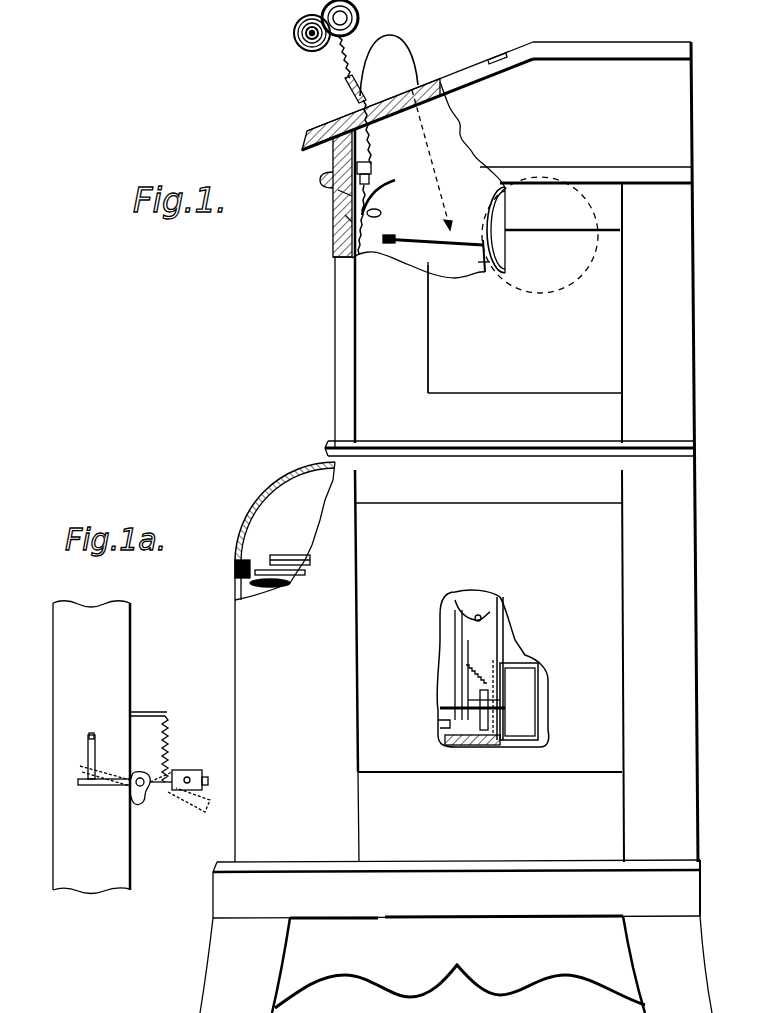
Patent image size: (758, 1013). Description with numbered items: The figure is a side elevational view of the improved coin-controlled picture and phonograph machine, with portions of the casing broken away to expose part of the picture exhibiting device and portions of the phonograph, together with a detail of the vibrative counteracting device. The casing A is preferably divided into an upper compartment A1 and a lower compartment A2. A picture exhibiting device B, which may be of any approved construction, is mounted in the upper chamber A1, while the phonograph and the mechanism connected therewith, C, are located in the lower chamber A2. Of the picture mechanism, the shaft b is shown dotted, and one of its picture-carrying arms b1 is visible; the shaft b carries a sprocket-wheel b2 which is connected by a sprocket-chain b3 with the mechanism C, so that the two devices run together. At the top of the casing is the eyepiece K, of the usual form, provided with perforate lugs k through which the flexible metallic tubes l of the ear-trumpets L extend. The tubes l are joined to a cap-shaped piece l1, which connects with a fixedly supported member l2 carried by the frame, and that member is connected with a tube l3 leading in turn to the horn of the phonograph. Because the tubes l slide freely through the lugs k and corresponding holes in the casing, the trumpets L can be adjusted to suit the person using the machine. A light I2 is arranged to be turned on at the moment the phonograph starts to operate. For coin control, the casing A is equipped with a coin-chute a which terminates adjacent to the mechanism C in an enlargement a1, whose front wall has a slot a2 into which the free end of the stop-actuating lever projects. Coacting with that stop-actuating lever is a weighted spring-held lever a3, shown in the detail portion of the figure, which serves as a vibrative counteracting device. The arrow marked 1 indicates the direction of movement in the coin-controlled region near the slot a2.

In FIG. 1, the casing A is at (456, 527).
In FIG. 1, the upper compartment A1 is at (460, 150).
In FIG. 1, the lower compartment A2 is at (295, 498).
In FIG. 1, the coin-chute a is at (497, 56).
In FIG. 1A, the coin-chute a is at (131, 747).
In FIG. 1, the enlargement a1 is at (525, 665).
In FIG. 1, the slot a2 is at (497, 722).
In FIG. 1A, the slot a2 is at (88, 750).
In FIG. 1, the weighted spring-held lever a3 is at (483, 728).
In FIG. 1A, the weighted spring-held lever a3 is at (114, 786).
In FIG. 1, the picture exhibiting device B is at (471, 329).
In FIG. 1, the shaft b is at (540, 238).
In FIG. 1, the picture-carrying arm b1 is at (440, 248).
In FIG. 1, the sprocket-wheel b2 is at (507, 228).
In FIG. 1, the sprocket-chain b3 is at (485, 262).
In FIG. 1, the phonograph and connected mechanism C is at (455, 617).
In FIG. 1, the light I2 is at (380, 212).
In FIG. 1, the eyepiece K is at (408, 60).
In FIG. 1, the perforate lugs k is at (356, 86).
In FIG. 1, the trumpets L is at (308, 42).
In FIG. 1, the flexible metallic tubes l is at (343, 58).
In FIG. 1, the cap-shaped piece l1 is at (322, 178).
In FIG. 1, the fixedly supported member l2 is at (338, 193).
In FIG. 1, the tube l3 is at (345, 218).
In FIG. 1, the direction arrow 1 is at (510, 752).